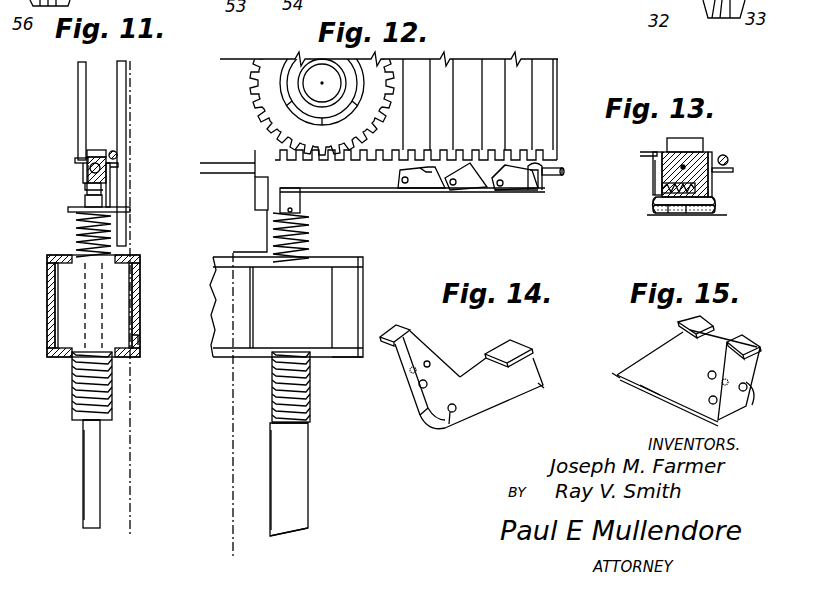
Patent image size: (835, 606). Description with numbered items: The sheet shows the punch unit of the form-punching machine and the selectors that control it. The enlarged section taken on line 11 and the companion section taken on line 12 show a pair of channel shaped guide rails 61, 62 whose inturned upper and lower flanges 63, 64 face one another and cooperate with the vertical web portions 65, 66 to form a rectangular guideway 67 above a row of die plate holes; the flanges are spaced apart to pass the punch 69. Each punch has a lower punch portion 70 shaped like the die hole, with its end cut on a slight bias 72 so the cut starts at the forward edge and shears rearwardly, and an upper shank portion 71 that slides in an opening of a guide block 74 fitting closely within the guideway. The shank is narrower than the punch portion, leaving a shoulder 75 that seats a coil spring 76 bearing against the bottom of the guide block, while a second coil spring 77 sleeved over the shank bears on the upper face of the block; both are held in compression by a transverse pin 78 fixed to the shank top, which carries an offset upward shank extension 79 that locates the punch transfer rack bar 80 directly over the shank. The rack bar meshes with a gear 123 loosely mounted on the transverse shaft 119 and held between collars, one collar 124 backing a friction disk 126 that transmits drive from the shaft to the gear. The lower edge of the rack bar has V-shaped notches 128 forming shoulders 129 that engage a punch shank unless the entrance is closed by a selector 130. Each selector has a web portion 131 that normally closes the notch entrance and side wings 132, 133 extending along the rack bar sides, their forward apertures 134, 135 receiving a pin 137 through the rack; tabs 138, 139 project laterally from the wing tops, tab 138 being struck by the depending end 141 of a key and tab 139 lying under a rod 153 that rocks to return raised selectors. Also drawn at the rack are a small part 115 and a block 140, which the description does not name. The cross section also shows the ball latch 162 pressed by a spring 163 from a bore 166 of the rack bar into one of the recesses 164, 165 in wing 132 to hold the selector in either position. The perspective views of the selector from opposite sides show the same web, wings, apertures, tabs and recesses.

In FIG. 12, the section line 11— 11 is at (253, 178).
In FIG. 11, the section line 12— 12 is at (138, 540).
In FIG. 11, the channel shaped guide rail 61 is at (47, 314).
In FIG. 12, the channel shaped guide rail 61 is at (225, 356).
In FIG. 11, the channel shaped guide rail 62 is at (140, 311).
In FIG. 11, the upper flange 63 is at (60, 257).
In FIG. 12, the upper flange 63 is at (363, 262).
In FIG. 11, the lower flange 64 is at (66, 357).
In FIG. 12, the lower flange 64 is at (340, 357).
In FIG. 11, the web portion 65 is at (48, 288).
In FIG. 12, the web portion 65 is at (216, 310).
In FIG. 11, the web portion 66 is at (132, 292).
In FIG. 11, the rectangular guideway 67 is at (140, 341).
In FIG. 11, the punch 69 is at (111, 453).
In FIG. 12, the punch 69 is at (270, 467).
In FIG. 11, the lower punch portion 70 is at (92, 483).
In FIG. 12, the lower punch portion 70 is at (281, 490).
In FIG. 11, the upper shank portion 71 is at (85, 199).
In FIG. 12, the upper shank portion 71 is at (299, 197).
In FIG. 12, the slight bias 72 is at (286, 537).
In FIG. 11, the guide block 74 is at (52, 330).
In FIG. 12, the guide block 74 is at (324, 312).
In FIG. 11, the shoulder 75 is at (95, 421).
In FIG. 12, the shoulder 75 is at (278, 424).
In FIG. 11, the coil spring 76 is at (112, 388).
In FIG. 12, the coil spring 76 is at (276, 367).
In FIG. 11, the coil spring 77 is at (77, 231).
In FIG. 12, the coil spring 77 is at (311, 231).
In FIG. 11, the transverse pin 78 is at (130, 207).
In FIG. 12, the transverse pin 78 is at (294, 209).
In FIG. 11, the offset upward shank extension 79 is at (126, 93).
In FIG. 11, the punch transfer rack bar 80 is at (96, 152).
In FIG. 13, the punch transfer rack bar 80 is at (710, 143).
In FIG. 11, the pin 115 is at (86, 167).
In FIG. 12, the pin 115 is at (558, 170).
In FIG. 13, the pin 115 is at (681, 165).
In FIG. 12, the transverse shaft 119 is at (318, 93).
In FIG. 12, the gear 123 is at (253, 80).
In FIG. 12, the collar 124 is at (296, 99).
In FIG. 12, the friction disk 126 is at (282, 93).
In FIG. 12, the V-shaped notch 128 is at (487, 185).
In FIG. 12, the shoulder 129 is at (491, 178).
In FIG. 11, the selector 130 is at (86, 183).
In FIG. 12, the selector 130 is at (404, 191).
In FIG. 13, the selector 130 is at (653, 217).
In FIG. 14, the selector 130 is at (540, 386).
In FIG. 15, the selector 130 is at (620, 381).
In FIG. 12, the web portion 131 is at (429, 192).
In FIG. 13, the web portion 131 is at (700, 217).
In FIG. 14, the web portion 131 is at (428, 418).
In FIG. 15, the web portion 131 is at (648, 380).
In FIG. 13, the side wing 132 is at (655, 181).
In FIG. 14, the side wing 132 is at (416, 349).
In FIG. 15, the side wing 132 is at (671, 398).
In FIG. 11, the side wing 133 is at (110, 178).
In FIG. 12, the side wing 133 is at (522, 191).
In FIG. 13, the side wing 133 is at (714, 189).
In FIG. 14, the side wing 133 is at (487, 398).
In FIG. 15, the side wing 133 is at (666, 341).
In FIG. 14, the aperture 134 is at (420, 388).
In FIG. 15, the aperture 134 is at (709, 403).
In FIG. 13, the aperture 135 is at (716, 212).
In FIG. 14, the aperture 135 is at (451, 424).
In FIG. 15, the aperture 135 is at (753, 406).
In FIG. 12, the pin 137 is at (502, 192).
In FIG. 13, the pin 137 is at (686, 214).
In FIG. 11, the tab 138 is at (76, 158).
In FIG. 13, the tab 138 is at (643, 156).
In FIG. 14, the tab 138 is at (398, 333).
In FIG. 15, the tab 138 is at (757, 321).
In FIG. 11, the tab 139 is at (110, 164).
In FIG. 12, the tab 139 is at (535, 162).
In FIG. 13, the tab 139 is at (733, 168).
In FIG. 14, the tab 139 is at (524, 349).
In FIG. 15, the tab 139 is at (684, 322).
In FIG. 12, the block 140 is at (256, 199).
In FIG. 11, the depending end 141 is at (78, 89).
In FIG. 12, the depending end 141 is at (548, 95).
In FIG. 11, the rod 153 is at (116, 153).
In FIG. 13, the rod 153 is at (727, 157).
In FIG. 13, the ball latch 162 is at (670, 213).
In FIG. 13, the spring 163 is at (679, 216).
In FIG. 13, the recess 164 is at (657, 189).
In FIG. 14, the recess 164 is at (410, 373).
In FIG. 14, the recess 165 is at (430, 365).
In FIG. 15, the recess 165 is at (708, 374).
In FIG. 13, the bore 166 is at (706, 186).